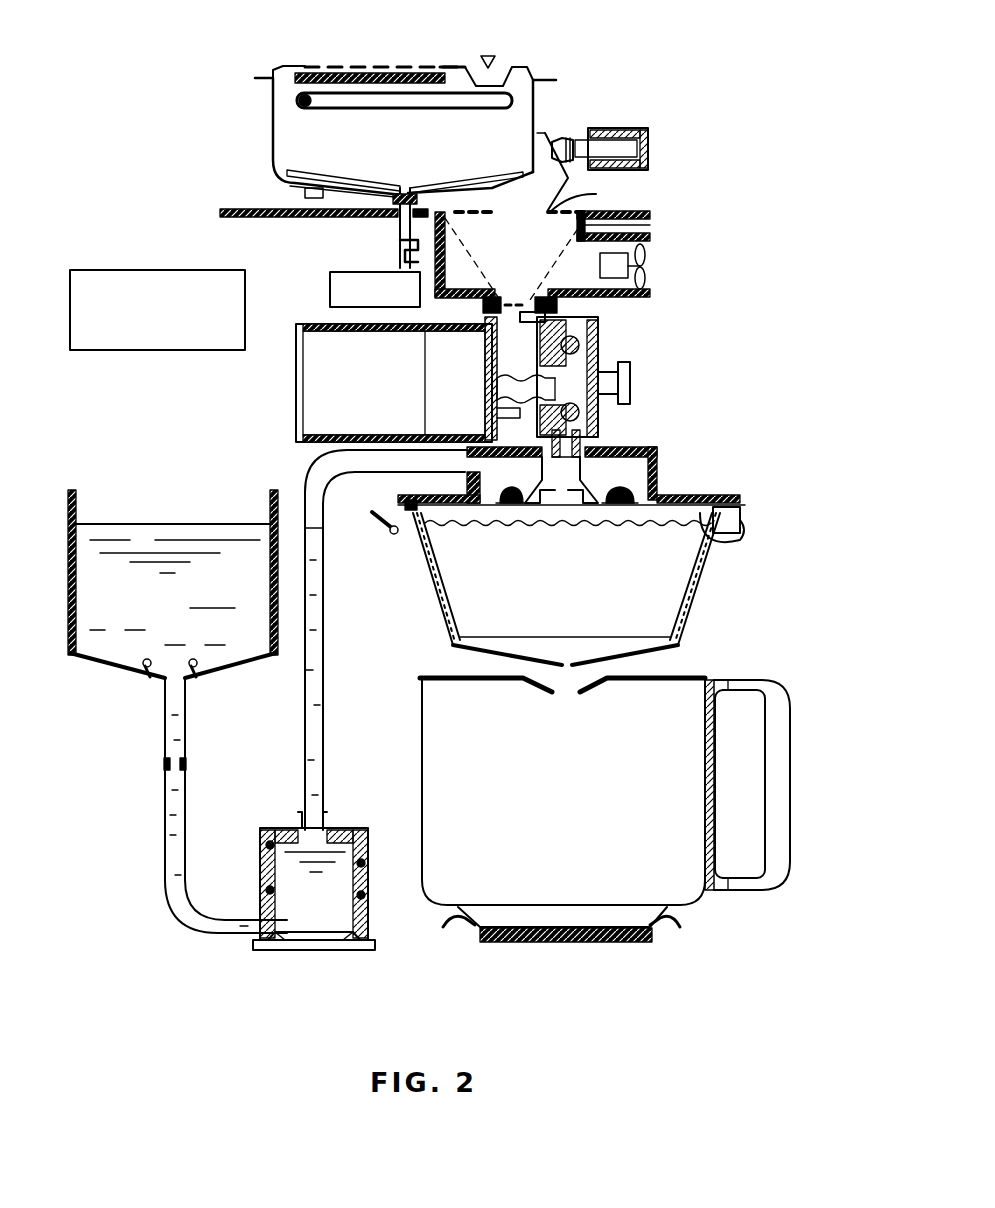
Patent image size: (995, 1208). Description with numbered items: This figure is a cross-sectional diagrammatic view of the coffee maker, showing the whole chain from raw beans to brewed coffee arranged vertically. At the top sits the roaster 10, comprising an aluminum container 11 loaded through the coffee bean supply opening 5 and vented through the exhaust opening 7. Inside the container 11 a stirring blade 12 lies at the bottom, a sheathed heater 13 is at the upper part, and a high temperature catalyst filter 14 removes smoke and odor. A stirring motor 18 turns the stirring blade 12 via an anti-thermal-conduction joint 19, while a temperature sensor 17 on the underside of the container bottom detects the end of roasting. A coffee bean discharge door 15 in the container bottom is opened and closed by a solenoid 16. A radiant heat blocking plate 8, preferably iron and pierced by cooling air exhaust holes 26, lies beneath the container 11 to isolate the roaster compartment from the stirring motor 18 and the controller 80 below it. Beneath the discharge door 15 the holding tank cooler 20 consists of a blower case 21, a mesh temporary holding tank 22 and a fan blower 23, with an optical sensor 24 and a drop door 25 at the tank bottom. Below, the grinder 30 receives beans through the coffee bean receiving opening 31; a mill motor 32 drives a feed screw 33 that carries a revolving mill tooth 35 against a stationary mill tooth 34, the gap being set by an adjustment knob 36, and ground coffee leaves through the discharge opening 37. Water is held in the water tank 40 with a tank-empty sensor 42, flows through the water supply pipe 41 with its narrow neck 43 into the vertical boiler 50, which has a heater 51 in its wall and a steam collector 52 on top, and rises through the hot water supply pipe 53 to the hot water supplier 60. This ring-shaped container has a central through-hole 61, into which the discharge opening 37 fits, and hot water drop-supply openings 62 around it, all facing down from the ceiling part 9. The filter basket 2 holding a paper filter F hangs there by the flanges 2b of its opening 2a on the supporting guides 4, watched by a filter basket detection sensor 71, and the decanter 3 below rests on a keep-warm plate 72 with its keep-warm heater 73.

The filter basket 2 is at (690, 605).
The opening 2a is at (730, 504).
The flanges 2b is at (740, 515).
The decanter 3 is at (785, 684).
The supporting guides 4 is at (728, 548).
The coffee bean supply opening 5 is at (505, 66).
The exhaust opening 7 is at (396, 64).
The radiant heat blocking plate 8 is at (260, 214).
The ceiling part 9 is at (687, 497).
The roaster 10 is at (236, 80).
The container 11 is at (268, 110).
The stirring blade 12 is at (300, 175).
The sheathed heater 13 is at (528, 98).
The high temperature catalyst filter 14 is at (331, 70).
The coffee bean discharge door 15 is at (572, 181).
The solenoid 16 is at (622, 128).
The temperature sensor 17 is at (290, 186).
The stirring motor 18 is at (330, 285).
The anti-thermal-conduction joint 19 is at (398, 249).
The holding tank cooler 20 is at (680, 292).
The blower case 21 is at (655, 225).
The temporary holding tank 22 is at (468, 262).
The fan blower 23 is at (648, 264).
The optical sensor 24 is at (560, 300).
The drop door 25 is at (548, 317).
The cooling air exhaust holes 26 is at (600, 195).
The grinder 30 is at (680, 375).
The coffee bean receiving opening 31 is at (517, 330).
The mill motor 32 is at (296, 420).
The feed screw 33 is at (510, 417).
The stationary mill tooth 34 is at (547, 357).
The revolving mill tooth 35 is at (598, 352).
The adjustment knob 36 is at (620, 388).
The discharge opening 37 is at (565, 440).
The water tank 40 is at (78, 510).
The water supply pipe 41 is at (165, 810).
The tank-empty sensor 42 is at (150, 680).
The narrow neck 43 is at (186, 764).
The vertical boiler 50 is at (368, 845).
The heater 51 is at (366, 897).
The steam collector 52 is at (330, 832).
The hot water supply pipe 53 is at (325, 679).
The hot water supplier 60 is at (657, 480).
The through-hole 61 is at (566, 480).
The hot water drop-supply openings 62 is at (521, 506).
The filter basket detection sensor 71 is at (380, 522).
The keep-warm plate 72 is at (670, 925).
The keep-warm heater 73 is at (550, 945).
The controller 80 is at (162, 352).
The paper filter F is at (685, 628).